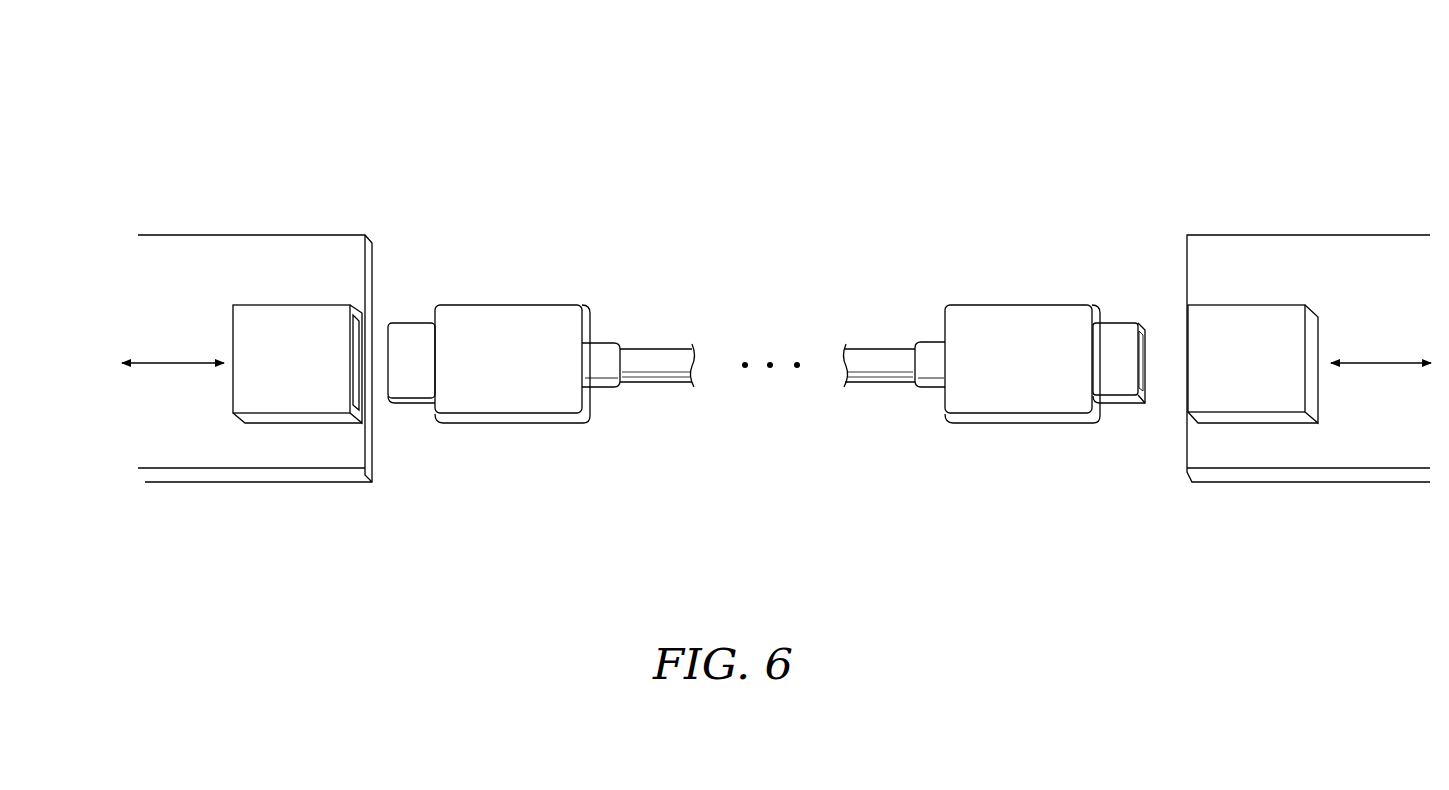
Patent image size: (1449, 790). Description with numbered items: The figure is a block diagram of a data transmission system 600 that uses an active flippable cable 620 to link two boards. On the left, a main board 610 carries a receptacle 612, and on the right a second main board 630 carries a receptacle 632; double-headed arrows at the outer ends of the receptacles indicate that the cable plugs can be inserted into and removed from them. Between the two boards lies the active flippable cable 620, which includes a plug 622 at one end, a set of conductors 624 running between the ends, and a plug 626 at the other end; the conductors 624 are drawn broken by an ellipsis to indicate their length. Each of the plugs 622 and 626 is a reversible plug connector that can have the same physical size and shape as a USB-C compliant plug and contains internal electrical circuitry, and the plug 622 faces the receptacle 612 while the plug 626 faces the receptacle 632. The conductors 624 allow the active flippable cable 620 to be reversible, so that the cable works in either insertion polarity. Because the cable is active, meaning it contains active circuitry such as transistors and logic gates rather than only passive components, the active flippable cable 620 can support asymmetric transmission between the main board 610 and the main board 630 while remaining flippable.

The data transmission system 600 is at (186, 98).
The main board 610 is at (290, 235).
The receptacle 612 is at (233, 391).
The active flippable cable 620 is at (428, 226).
The plug 622 is at (510, 305).
The set of conductors 624 is at (642, 349).
The plug 626 is at (1000, 305).
The main board 630 is at (1295, 235).
The receptacle 632 is at (1320, 388).